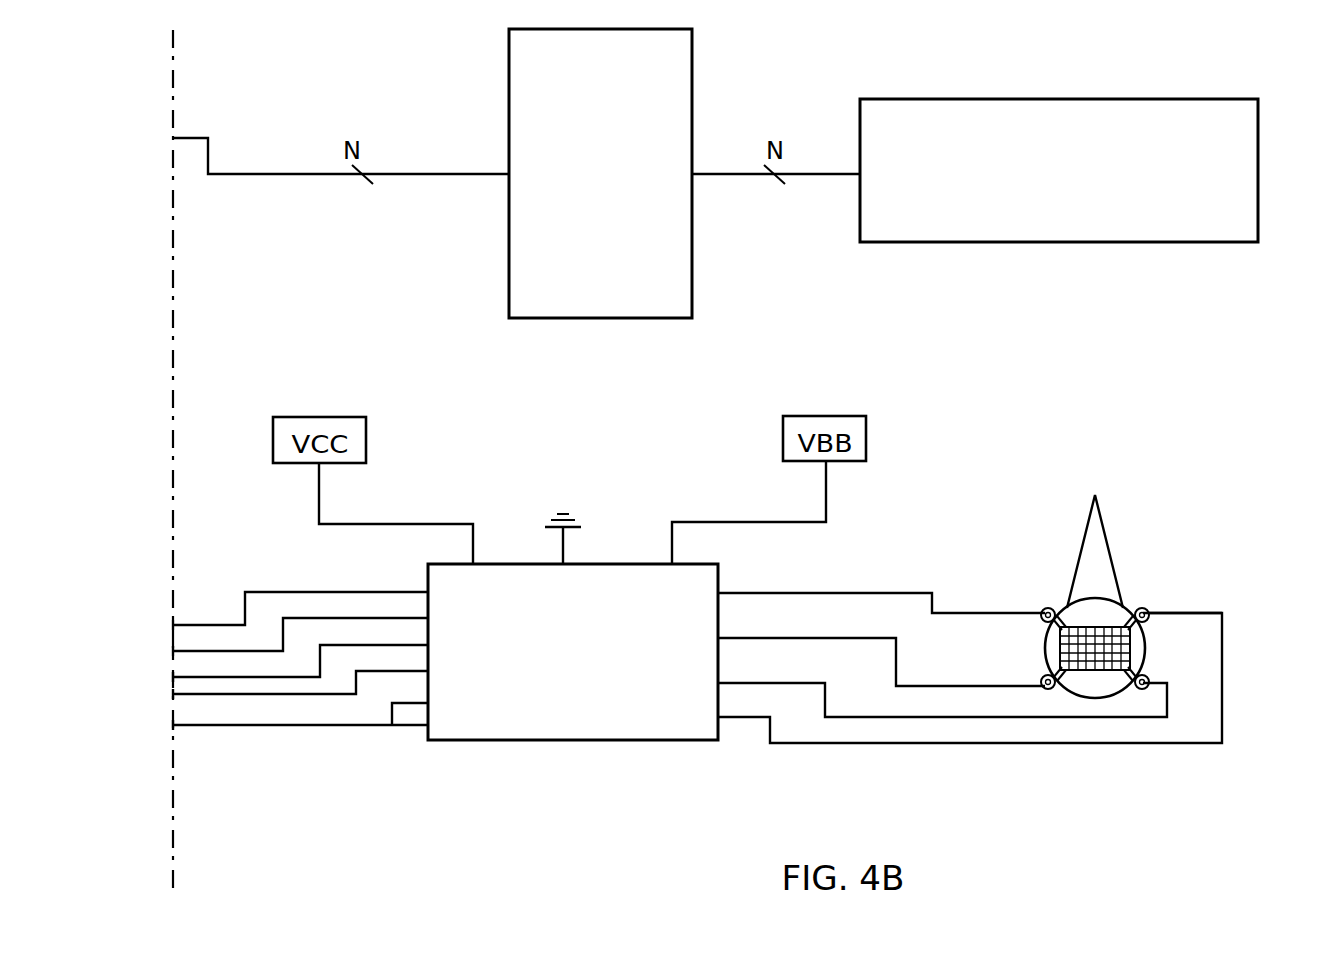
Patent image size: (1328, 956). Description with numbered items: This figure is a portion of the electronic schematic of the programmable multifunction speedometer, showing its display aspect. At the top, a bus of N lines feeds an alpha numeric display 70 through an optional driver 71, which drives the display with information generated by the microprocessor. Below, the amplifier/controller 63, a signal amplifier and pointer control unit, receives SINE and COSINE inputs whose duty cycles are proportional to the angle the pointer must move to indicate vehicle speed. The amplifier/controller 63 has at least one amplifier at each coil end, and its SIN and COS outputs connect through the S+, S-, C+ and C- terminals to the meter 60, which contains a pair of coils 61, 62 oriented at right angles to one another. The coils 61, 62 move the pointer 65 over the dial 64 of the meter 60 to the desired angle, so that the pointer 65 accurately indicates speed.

The meter 60 is at (1127, 612).
The coil 61 is at (1149, 608).
The coil 62 is at (1141, 690).
The amplifier/controller 63 is at (495, 563).
The dial 64 is at (1137, 610).
The pointer 65 is at (1098, 510).
The alpha numeric display 70 is at (1056, 98).
The optional driver 71 is at (693, 75).